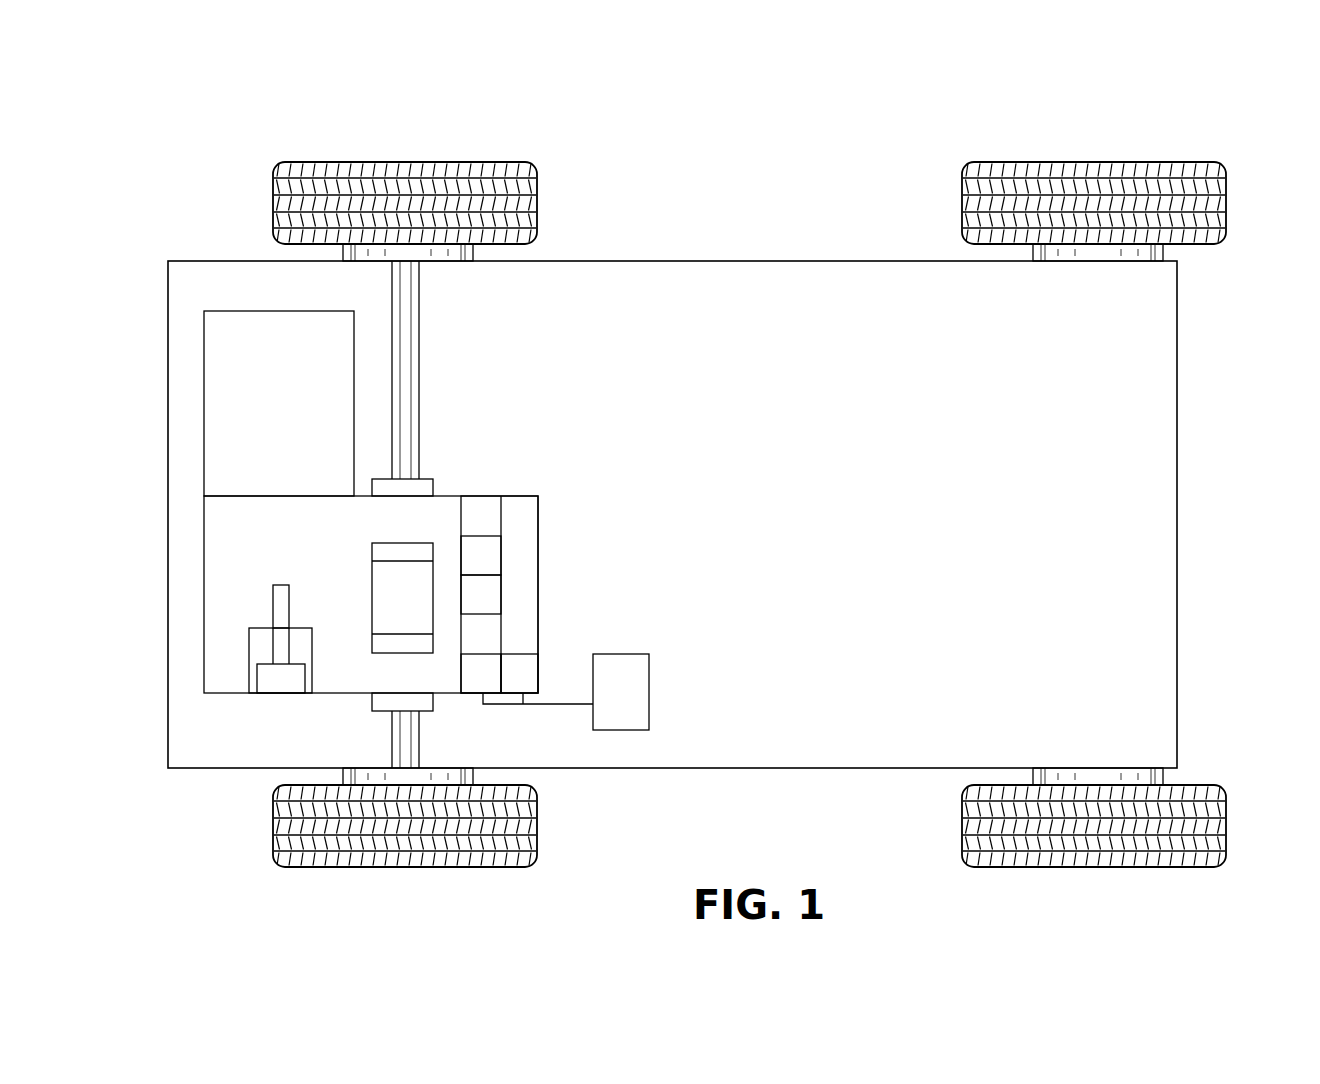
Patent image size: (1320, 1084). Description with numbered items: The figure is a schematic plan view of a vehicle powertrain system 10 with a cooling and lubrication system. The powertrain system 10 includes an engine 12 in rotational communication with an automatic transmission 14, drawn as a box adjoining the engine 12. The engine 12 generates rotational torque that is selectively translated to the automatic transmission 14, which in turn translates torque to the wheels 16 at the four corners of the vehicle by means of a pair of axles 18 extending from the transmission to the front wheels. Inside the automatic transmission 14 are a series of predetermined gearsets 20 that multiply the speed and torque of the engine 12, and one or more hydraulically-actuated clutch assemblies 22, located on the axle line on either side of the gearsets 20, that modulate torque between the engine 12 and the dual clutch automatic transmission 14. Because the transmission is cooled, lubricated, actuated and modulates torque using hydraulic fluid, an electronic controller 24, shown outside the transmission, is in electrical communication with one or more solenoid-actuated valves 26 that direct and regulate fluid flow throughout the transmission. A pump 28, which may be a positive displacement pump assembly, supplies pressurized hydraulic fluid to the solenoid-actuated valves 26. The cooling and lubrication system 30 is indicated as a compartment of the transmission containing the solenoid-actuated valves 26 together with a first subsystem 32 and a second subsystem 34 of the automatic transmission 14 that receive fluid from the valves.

The vehicle powertrain system 10 is at (184, 141).
The engine 12 is at (288, 414).
The automatic transmission 14 is at (200, 577).
The wheels 16 is at (538, 186).
The axles 18 is at (415, 340).
The gearsets 20 is at (414, 608).
The hydraulically-actuated clutch assemblies 22 is at (428, 551).
The electronic controller 24 is at (633, 701).
The solenoid-actuated valves 26 is at (493, 684).
The pump 28 is at (298, 625).
The cooling and lubrication system 30 is at (502, 493).
The first subsystem 32 is at (493, 566).
The second subsystem 34 is at (493, 606).